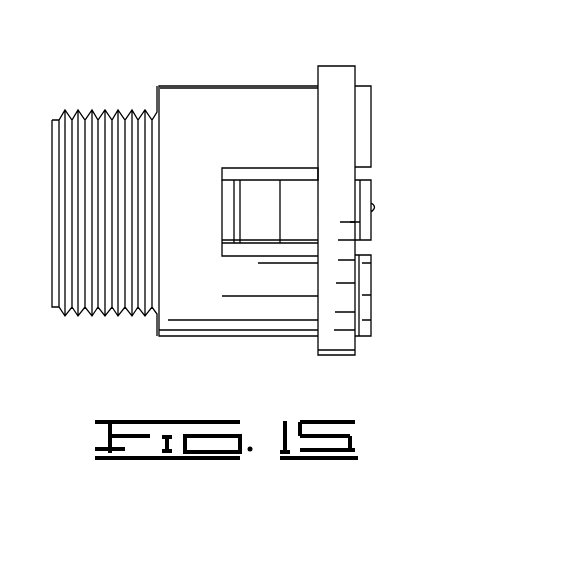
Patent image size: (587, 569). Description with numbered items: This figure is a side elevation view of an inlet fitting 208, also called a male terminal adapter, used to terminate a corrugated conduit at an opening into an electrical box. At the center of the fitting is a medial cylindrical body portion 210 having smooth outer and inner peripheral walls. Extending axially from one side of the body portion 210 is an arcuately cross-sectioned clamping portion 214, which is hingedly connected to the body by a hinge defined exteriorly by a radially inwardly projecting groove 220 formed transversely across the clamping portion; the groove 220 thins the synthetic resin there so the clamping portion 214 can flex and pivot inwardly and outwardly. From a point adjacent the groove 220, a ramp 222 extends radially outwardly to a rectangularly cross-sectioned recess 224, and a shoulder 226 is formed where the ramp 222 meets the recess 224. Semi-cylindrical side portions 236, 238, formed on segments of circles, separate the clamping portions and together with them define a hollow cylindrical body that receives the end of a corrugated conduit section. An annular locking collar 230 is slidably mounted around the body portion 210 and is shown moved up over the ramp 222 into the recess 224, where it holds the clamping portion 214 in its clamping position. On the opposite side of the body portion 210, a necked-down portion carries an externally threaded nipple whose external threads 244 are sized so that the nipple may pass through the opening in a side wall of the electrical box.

The inlet fitting 208 is at (253, 77).
The external threads 244 is at (97, 118).
The medial cylindrical body portion 210 is at (200, 217).
The semi-cylindrical side portion 236 is at (280, 120).
The semi-cylindrical side portion 238 is at (270, 316).
The shoulder 226 is at (283, 187).
The groove 220 is at (232, 192).
The ramp 222 is at (232, 247).
The recess 224 is at (301, 222).
The locking collar 230 is at (335, 117).
The clamping portion 214 is at (371, 187).